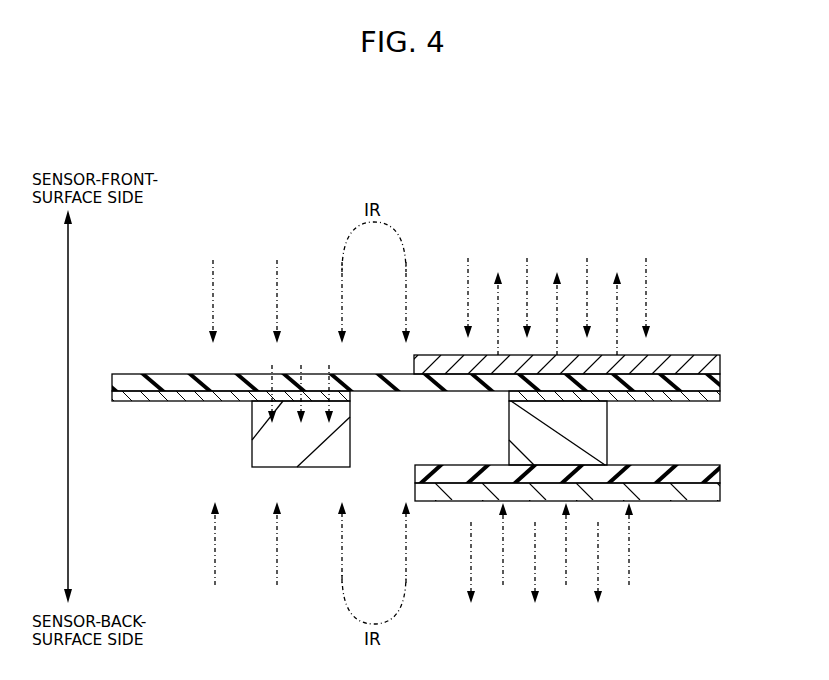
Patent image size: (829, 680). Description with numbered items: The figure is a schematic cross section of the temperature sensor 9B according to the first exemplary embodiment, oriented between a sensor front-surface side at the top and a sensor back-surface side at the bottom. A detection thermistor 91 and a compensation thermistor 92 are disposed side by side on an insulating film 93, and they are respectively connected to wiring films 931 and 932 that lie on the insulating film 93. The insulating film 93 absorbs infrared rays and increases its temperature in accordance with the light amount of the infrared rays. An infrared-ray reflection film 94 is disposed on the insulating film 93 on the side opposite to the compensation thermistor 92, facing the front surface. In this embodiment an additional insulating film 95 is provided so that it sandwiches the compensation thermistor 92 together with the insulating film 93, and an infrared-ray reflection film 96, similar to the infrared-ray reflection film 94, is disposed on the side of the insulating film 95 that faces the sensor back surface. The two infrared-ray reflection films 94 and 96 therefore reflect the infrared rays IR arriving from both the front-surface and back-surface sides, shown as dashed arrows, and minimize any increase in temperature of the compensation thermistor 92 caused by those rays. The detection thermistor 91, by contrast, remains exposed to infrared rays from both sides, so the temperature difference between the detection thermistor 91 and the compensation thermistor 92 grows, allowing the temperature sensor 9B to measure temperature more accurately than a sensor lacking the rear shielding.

The temperature sensor 9B is at (650, 222).
The detection thermistor 91 is at (350, 437).
The compensation thermistor 92 is at (607, 438).
The insulating film 93 is at (720, 382).
The wiring film 931 is at (149, 402).
The wiring film 932 is at (719, 399).
The infrared-ray reflection film 94 is at (719, 364).
The insulating film 95 is at (719, 474).
The infrared-ray reflection film 96 is at (719, 492).